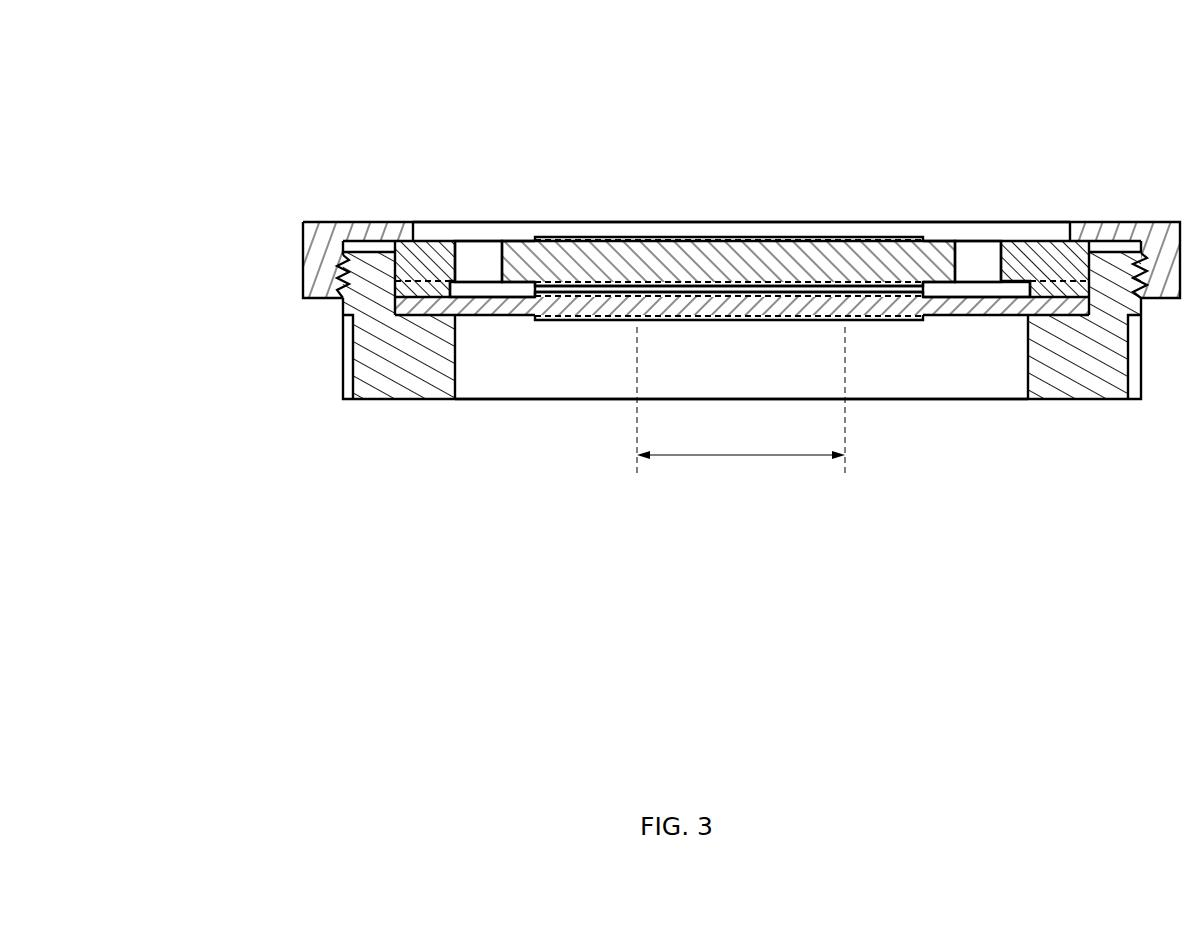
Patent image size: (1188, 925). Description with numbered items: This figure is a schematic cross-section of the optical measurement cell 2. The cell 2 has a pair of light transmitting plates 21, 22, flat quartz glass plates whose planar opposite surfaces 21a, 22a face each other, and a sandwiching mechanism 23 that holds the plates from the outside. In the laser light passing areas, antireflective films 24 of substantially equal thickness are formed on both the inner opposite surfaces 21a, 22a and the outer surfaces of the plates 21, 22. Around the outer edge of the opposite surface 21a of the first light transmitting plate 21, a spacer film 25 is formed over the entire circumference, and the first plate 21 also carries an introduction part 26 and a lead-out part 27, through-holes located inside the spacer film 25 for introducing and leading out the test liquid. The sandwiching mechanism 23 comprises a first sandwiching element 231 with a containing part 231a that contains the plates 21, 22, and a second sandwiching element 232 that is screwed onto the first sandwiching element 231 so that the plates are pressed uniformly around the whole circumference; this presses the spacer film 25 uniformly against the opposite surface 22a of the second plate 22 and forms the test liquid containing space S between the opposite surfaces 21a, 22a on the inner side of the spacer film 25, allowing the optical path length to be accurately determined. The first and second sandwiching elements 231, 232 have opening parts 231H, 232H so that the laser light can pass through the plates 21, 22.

The optical measurement cell 2 is at (412, 87).
The first light transmitting plate 21 is at (730, 250).
The opposite surface of the first light transmitting plate 21a is at (690, 287).
The second light transmitting plate 22 is at (768, 306).
The opposite surface of the second light transmitting plate 22a is at (774, 291).
The sandwiching mechanism 23 is at (190, 278).
The first sandwiching element 231 is at (343, 337).
The containing part 231a is at (398, 268).
The opening part of the first sandwiching element 231H is at (545, 402).
The second sandwiching element 232 is at (303, 244).
The opening part of the second sandwiching element 232H is at (543, 216).
The antireflective film 24 is at (625, 283).
The spacer film 25 is at (453, 284).
The introduction part 26 is at (971, 236).
The lead-out part 27 is at (486, 236).
The test liquid containing space S is at (775, 288).